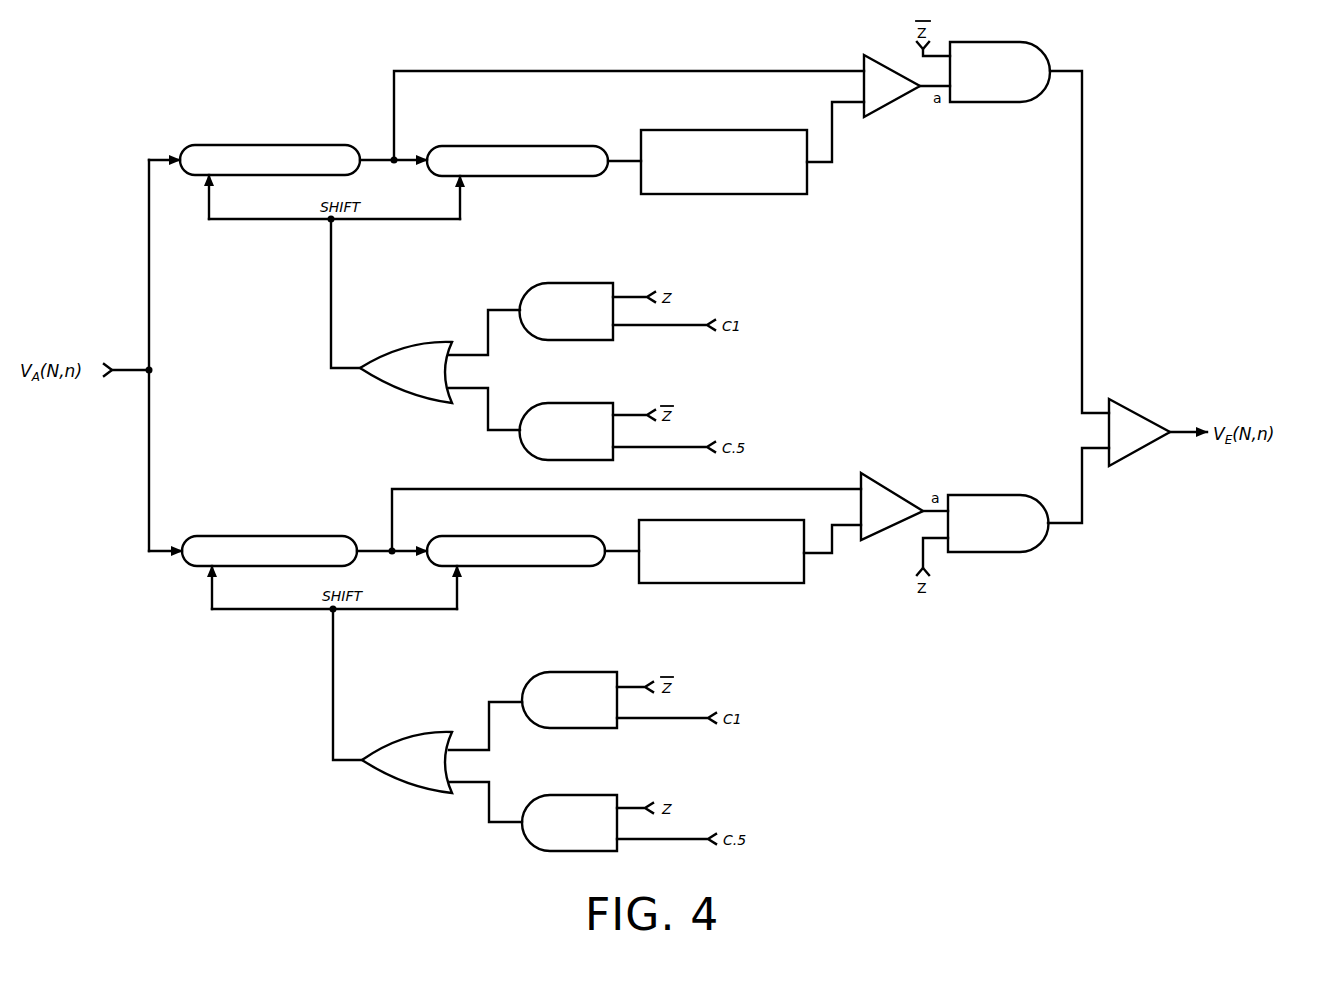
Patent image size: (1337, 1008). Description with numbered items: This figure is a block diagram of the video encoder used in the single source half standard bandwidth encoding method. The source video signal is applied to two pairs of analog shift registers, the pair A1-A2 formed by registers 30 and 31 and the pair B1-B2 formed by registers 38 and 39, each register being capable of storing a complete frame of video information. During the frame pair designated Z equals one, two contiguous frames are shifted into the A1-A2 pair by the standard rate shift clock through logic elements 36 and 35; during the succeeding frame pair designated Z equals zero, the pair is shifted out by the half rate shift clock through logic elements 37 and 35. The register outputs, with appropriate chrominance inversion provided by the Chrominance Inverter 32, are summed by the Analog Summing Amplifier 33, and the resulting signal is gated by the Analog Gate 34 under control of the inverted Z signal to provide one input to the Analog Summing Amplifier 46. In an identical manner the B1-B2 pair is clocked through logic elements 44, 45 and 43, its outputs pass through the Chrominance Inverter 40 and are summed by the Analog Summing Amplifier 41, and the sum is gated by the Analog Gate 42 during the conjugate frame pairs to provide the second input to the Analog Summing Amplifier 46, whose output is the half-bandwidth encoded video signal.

The Analog Shift Register A1 30 is at (181, 150).
The Analog Shift Register A2 31 is at (538, 176).
The Chrominance Inverter 32 is at (750, 194).
The Analog Summing Amplifier 33 is at (869, 108).
The Analog Gate 34 is at (1037, 42).
The logic element 35 is at (424, 382).
The logic element 36 is at (584, 324).
The logic element 37 is at (584, 444).
The Analog Shift Register B1 38 is at (184, 563).
The Analog Shift Register B2 39 is at (537, 566).
The Chrominance Inverter 40 is at (740, 583).
The Analog Summing Amplifier 41 is at (897, 489).
The Analog Gate 42 is at (985, 552).
The logic element 43 is at (426, 774).
The logic element 44 is at (585, 713).
The logic element 45 is at (585, 836).
The Analog Summing Amplifier 46 is at (1135, 452).